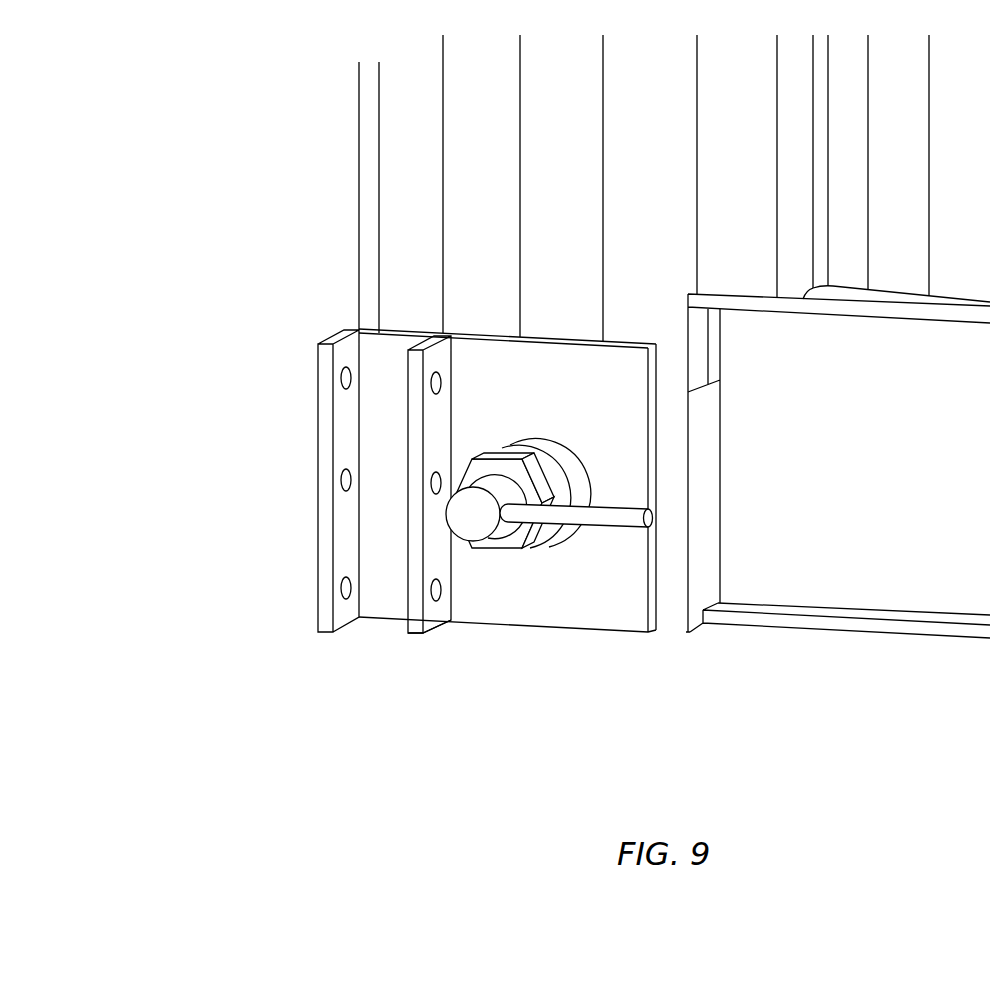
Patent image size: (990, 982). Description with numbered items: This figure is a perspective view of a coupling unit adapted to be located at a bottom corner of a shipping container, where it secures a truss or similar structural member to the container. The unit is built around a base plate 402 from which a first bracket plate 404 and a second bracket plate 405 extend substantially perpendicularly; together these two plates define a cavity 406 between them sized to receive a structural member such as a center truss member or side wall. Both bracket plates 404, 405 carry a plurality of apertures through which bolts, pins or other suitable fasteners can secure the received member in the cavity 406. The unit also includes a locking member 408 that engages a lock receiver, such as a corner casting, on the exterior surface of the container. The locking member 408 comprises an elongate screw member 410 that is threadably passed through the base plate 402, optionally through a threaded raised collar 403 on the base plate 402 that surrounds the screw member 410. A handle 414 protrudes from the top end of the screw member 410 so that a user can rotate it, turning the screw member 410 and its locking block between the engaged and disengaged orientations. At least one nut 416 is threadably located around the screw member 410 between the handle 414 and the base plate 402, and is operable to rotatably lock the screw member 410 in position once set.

The base plate 402 is at (608, 607).
The threaded raised collar 403 is at (573, 473).
The first bracket plate 404 is at (334, 632).
The second bracket plate 405 is at (423, 635).
The cavity 406 is at (372, 651).
The locking member 408 is at (491, 590).
The screw member 410 is at (473, 515).
The handle 414 is at (578, 524).
The nut 416 is at (483, 455).